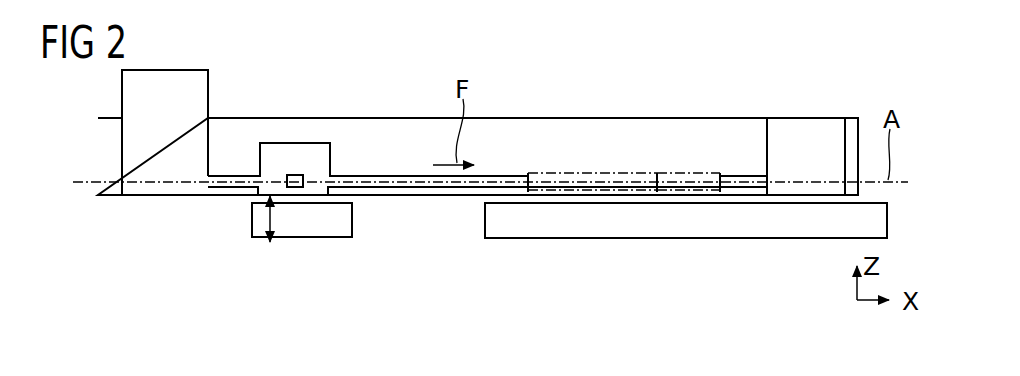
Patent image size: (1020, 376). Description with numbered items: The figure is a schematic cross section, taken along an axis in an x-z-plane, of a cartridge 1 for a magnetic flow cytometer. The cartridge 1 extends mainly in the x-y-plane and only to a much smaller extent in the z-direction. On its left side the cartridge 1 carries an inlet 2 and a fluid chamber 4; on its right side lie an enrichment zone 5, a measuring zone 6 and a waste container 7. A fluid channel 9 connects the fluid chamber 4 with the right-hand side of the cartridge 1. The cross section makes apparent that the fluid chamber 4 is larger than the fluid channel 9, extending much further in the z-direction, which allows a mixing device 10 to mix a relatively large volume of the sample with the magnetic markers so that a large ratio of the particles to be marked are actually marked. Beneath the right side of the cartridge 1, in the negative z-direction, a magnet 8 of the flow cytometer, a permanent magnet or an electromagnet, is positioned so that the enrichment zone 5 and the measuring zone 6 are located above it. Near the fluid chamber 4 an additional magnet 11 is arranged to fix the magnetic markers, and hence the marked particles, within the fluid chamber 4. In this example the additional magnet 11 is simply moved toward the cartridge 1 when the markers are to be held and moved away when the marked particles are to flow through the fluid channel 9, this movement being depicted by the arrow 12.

The cartridge 1 is at (350, 88).
The inlet 2 is at (167, 78).
The fluid chamber 4 is at (273, 152).
The enrichment zone 5 is at (588, 170).
The measuring zone 6 is at (685, 170).
The waste container 7 is at (807, 130).
The magnet 8 is at (670, 228).
The fluid channel 9 is at (390, 171).
The mixing device 10 is at (292, 176).
The additional magnet 11 is at (313, 228).
The arrow 12 is at (268, 222).